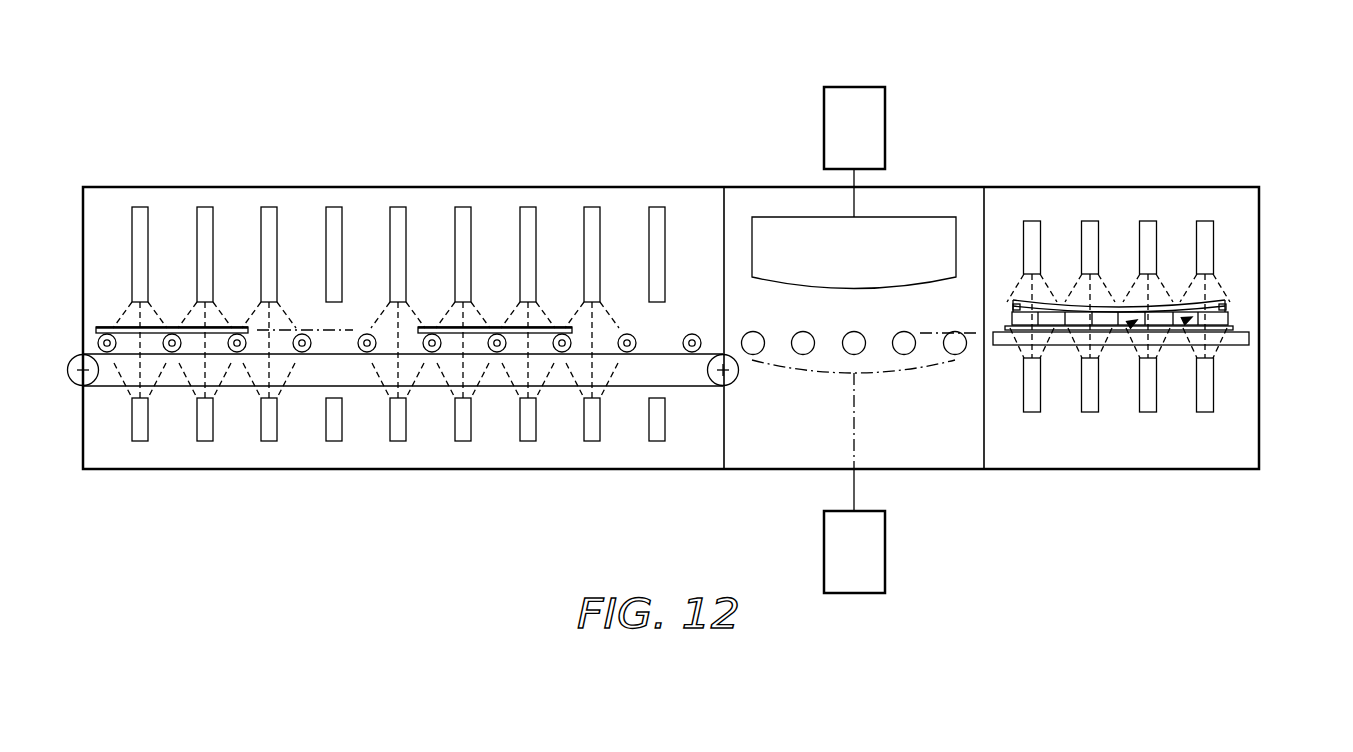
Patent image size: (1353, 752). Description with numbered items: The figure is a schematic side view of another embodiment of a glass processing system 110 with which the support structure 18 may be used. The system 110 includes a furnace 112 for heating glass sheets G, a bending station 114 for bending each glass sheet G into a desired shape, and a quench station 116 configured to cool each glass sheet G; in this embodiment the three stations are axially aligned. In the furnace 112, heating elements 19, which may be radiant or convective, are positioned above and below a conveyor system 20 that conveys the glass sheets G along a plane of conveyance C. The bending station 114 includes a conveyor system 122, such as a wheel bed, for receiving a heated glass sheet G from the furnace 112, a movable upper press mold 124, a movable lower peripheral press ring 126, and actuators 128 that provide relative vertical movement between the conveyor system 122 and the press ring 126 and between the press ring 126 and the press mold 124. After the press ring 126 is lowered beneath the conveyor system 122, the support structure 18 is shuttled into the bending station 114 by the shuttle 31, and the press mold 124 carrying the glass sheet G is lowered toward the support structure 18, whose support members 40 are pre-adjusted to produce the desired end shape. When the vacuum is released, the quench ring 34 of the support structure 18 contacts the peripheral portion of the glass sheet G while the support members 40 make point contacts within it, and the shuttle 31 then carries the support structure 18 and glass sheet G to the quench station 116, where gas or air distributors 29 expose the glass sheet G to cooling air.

The glass processing system 110 is at (552, 66).
The furnace 112 is at (251, 164).
The bending station 114 is at (962, 150).
The quench station 116 is at (1229, 168).
The heating elements 19 is at (387, 227).
The conveyor system 20 is at (172, 398).
The upper press mold 124 is at (805, 217).
The actuators 128 is at (885, 129).
The lower peripheral press ring 126 is at (890, 372).
The conveyor system 122 is at (963, 363).
The gas or air distributors 29 is at (1213, 247).
The quench ring 34 is at (1227, 307).
The support structure 18 is at (1240, 316).
The shuttle 31 is at (1245, 355).
The support members 40 is at (1190, 318).
The glass sheet G is at (173, 327).
The plane of conveyance C is at (337, 328).